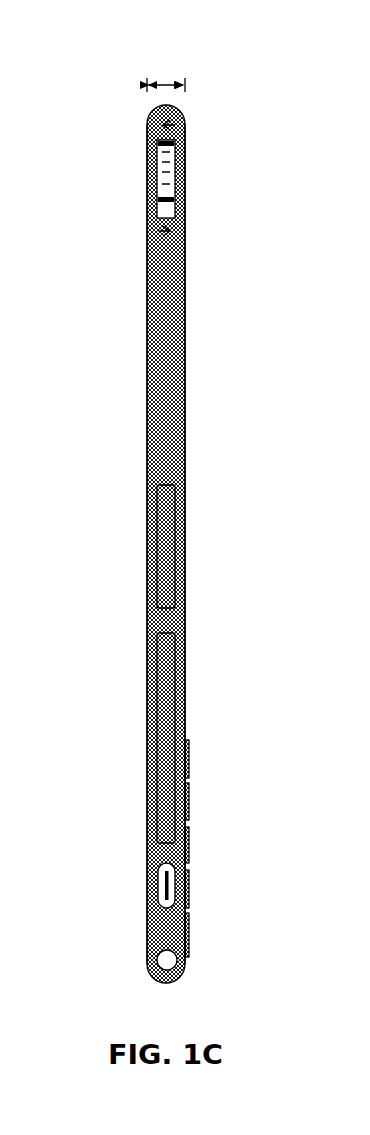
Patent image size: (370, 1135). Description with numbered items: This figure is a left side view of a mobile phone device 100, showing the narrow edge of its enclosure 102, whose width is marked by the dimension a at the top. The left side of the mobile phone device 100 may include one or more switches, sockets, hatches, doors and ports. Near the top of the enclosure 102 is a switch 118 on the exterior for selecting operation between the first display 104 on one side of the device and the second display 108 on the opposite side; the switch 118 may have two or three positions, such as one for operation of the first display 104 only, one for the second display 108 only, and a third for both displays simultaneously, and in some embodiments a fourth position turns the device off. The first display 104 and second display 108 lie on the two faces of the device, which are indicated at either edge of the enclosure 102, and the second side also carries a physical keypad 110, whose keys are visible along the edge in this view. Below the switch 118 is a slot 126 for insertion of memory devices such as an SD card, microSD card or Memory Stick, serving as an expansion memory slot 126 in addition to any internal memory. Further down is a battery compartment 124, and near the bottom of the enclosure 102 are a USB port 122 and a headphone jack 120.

The mobile phone device 100 is at (112, 150).
The enclosure 102 is at (166, 322).
The first display 104 is at (147, 418).
The second display 108 is at (185, 432).
The physical keypad 110 is at (201, 852).
The switch 118 is at (176, 172).
The headphone jack 120 is at (155, 949).
The USB port 122 is at (157, 868).
The battery compartment 124 is at (167, 740).
The slot 126 is at (166, 537).
The width dimension alpha a is at (166, 72).